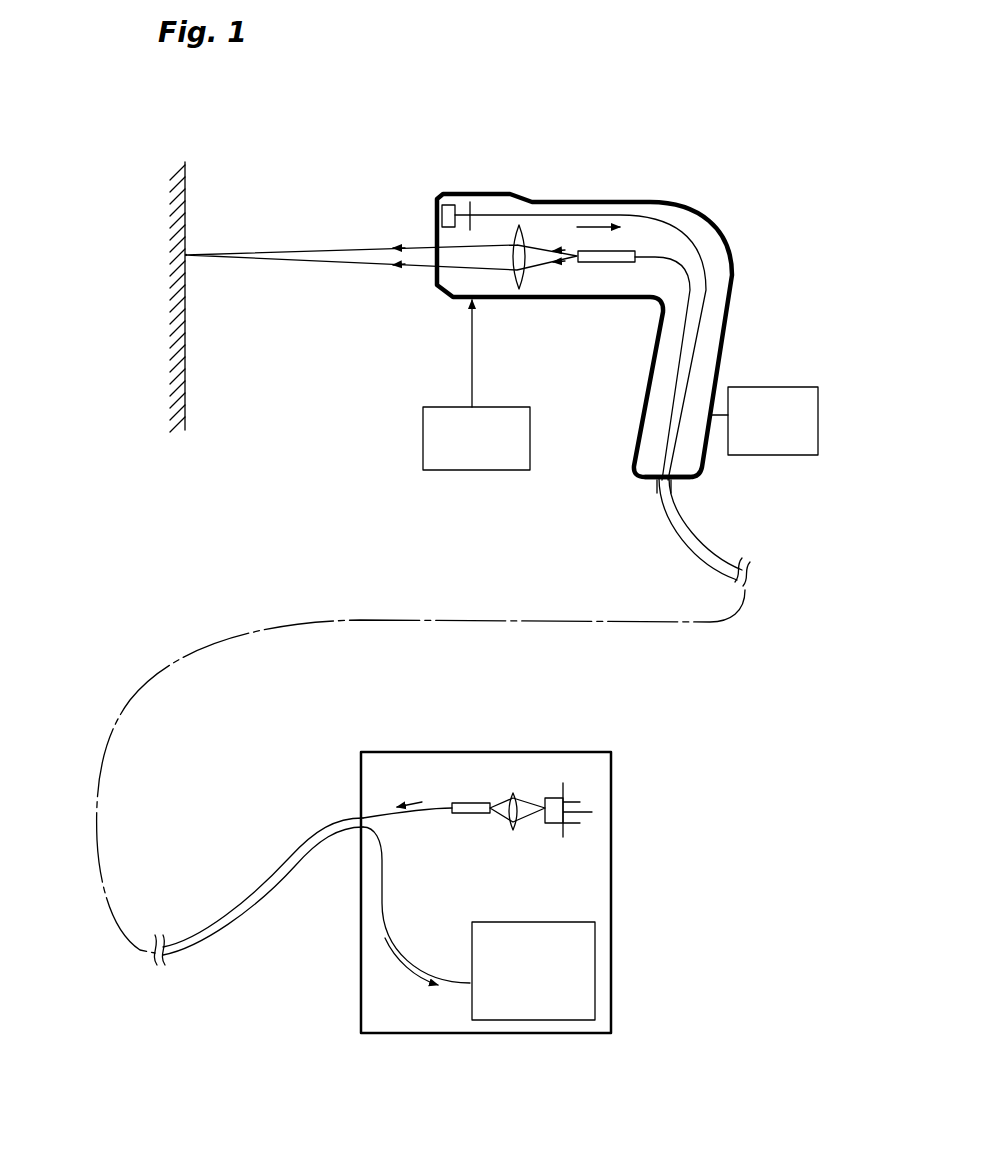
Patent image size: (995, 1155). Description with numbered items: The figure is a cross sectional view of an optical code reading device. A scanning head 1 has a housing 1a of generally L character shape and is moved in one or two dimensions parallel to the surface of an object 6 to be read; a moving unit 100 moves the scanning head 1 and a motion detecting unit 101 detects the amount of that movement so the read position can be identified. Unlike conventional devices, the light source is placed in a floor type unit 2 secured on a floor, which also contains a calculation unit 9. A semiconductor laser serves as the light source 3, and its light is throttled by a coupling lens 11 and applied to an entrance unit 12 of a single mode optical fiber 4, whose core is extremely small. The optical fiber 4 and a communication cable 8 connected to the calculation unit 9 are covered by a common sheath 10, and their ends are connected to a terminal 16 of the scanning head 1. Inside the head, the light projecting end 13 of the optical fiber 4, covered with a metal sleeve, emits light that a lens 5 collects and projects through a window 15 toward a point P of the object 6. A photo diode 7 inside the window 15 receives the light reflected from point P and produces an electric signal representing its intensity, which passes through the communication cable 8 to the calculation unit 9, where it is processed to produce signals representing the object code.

The scanning head 1 is at (722, 226).
The housing 1a is at (700, 457).
The floor type unit 2 is at (362, 797).
The light source 3 is at (550, 805).
The single mode optical fiber 4 is at (690, 303).
The lens 5 is at (521, 228).
The object 6 is at (185, 287).
The photo diode 7 is at (450, 197).
The communication cable 8 is at (692, 350).
The calculation unit 9 is at (570, 977).
The common sheath 10 is at (695, 538).
The lens 11 is at (517, 797).
The entrance unit 12 is at (467, 803).
The light projecting end 13 is at (601, 263).
The window 15 is at (435, 260).
The terminal 16 is at (657, 493).
The moving unit 100 is at (423, 447).
The motion detecting unit 101 is at (818, 427).
The point P is at (201, 239).